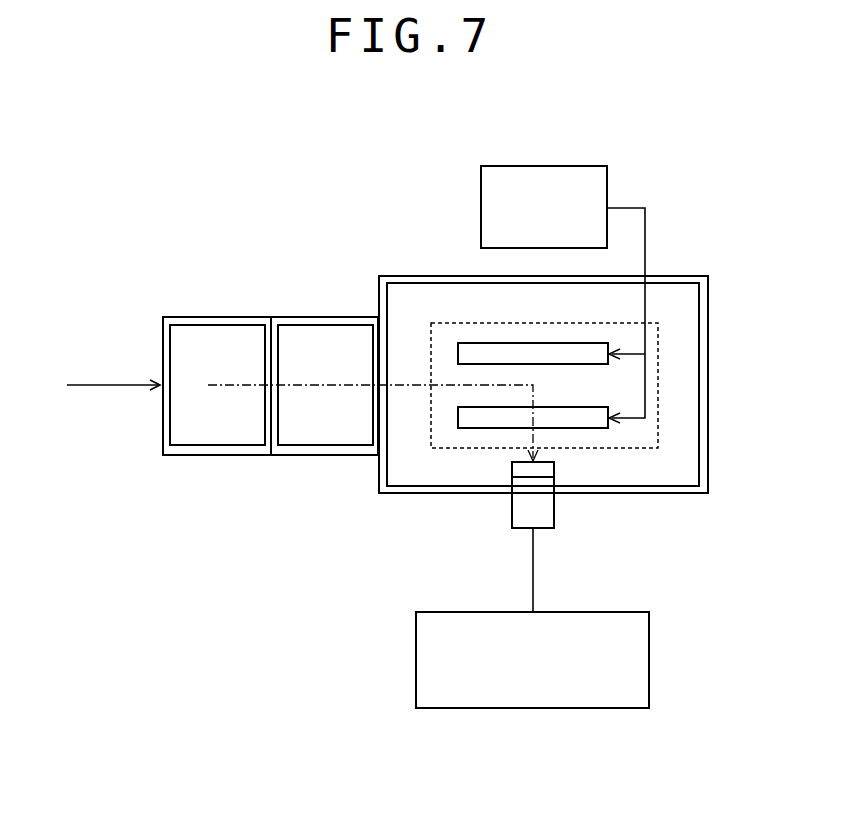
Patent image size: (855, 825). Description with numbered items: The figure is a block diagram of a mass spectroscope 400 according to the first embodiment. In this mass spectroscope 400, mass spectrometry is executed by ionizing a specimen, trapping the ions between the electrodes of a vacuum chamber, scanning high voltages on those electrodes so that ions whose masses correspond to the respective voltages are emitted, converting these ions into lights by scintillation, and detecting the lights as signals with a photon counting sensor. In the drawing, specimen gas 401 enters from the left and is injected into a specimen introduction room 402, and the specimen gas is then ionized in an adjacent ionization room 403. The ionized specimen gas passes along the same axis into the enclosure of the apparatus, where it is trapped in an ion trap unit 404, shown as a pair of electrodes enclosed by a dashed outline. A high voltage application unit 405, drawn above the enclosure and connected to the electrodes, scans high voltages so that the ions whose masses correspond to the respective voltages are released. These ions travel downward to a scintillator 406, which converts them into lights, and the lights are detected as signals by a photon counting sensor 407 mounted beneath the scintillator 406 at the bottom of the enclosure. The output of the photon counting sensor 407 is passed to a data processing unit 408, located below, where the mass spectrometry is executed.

The mass spectroscope 400 is at (746, 251).
The specimen gas 401 is at (85, 385).
The specimen introduction room 402 is at (214, 316).
The ionization room 403 is at (321, 316).
The ion trap unit 404 is at (656, 434).
The high voltage application unit 405 is at (546, 166).
The scintillator 406 is at (512, 470).
The photon counting sensor 407 is at (555, 508).
The data processing unit 408 is at (649, 650).